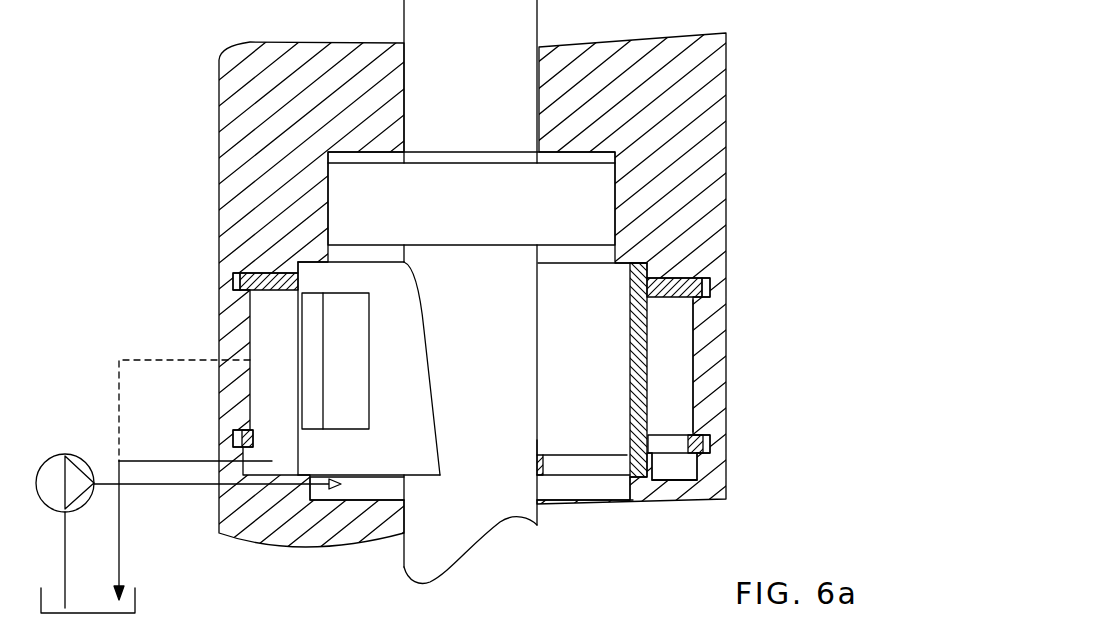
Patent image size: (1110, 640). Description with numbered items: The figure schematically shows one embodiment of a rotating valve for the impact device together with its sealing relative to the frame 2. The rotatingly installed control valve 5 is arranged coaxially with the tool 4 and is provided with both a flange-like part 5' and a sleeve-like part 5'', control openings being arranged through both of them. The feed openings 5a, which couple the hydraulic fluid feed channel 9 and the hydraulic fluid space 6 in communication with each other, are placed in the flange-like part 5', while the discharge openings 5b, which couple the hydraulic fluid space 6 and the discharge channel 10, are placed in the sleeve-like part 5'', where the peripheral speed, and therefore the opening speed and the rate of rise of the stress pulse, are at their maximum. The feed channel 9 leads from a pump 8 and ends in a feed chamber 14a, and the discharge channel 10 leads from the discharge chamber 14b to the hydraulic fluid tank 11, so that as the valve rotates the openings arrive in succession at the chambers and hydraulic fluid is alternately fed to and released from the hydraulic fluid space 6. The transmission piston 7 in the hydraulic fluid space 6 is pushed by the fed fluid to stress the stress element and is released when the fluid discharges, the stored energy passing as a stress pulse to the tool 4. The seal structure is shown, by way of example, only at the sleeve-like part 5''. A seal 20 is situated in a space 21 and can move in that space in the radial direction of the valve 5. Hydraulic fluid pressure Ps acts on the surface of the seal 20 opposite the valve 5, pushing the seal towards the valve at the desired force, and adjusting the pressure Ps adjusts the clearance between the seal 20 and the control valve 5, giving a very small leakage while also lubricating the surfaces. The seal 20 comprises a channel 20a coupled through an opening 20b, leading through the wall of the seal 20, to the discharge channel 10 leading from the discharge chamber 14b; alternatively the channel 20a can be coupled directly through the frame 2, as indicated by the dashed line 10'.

The frame 2 is at (219, 80).
The tool 4 is at (446, 551).
The control valve 5 is at (400, 368).
The flange-like part 5' is at (513, 423).
The sleeve-like part 5'' is at (602, 370).
The feed openings 5a is at (590, 468).
The discharge openings 5b is at (372, 384).
The first hydraulic fluid space 6 is at (593, 258).
The transmission piston 7 is at (494, 217).
The pump 8 is at (73, 455).
The hydraulic fluid feed channel 9 is at (200, 485).
The hydraulic fluid discharge channel 10 is at (195, 429).
The dashed line connection 10' is at (162, 383).
The hydraulic fluid tank 11 is at (135, 603).
The feed chamber 14a is at (593, 487).
The discharge chamber 14b is at (667, 468).
The seal 20 is at (250, 292).
The channel 20a is at (662, 368).
The opening 20b is at (690, 462).
The space 21 is at (706, 441).
The hydraulic fluid pressure Ps is at (232, 282).